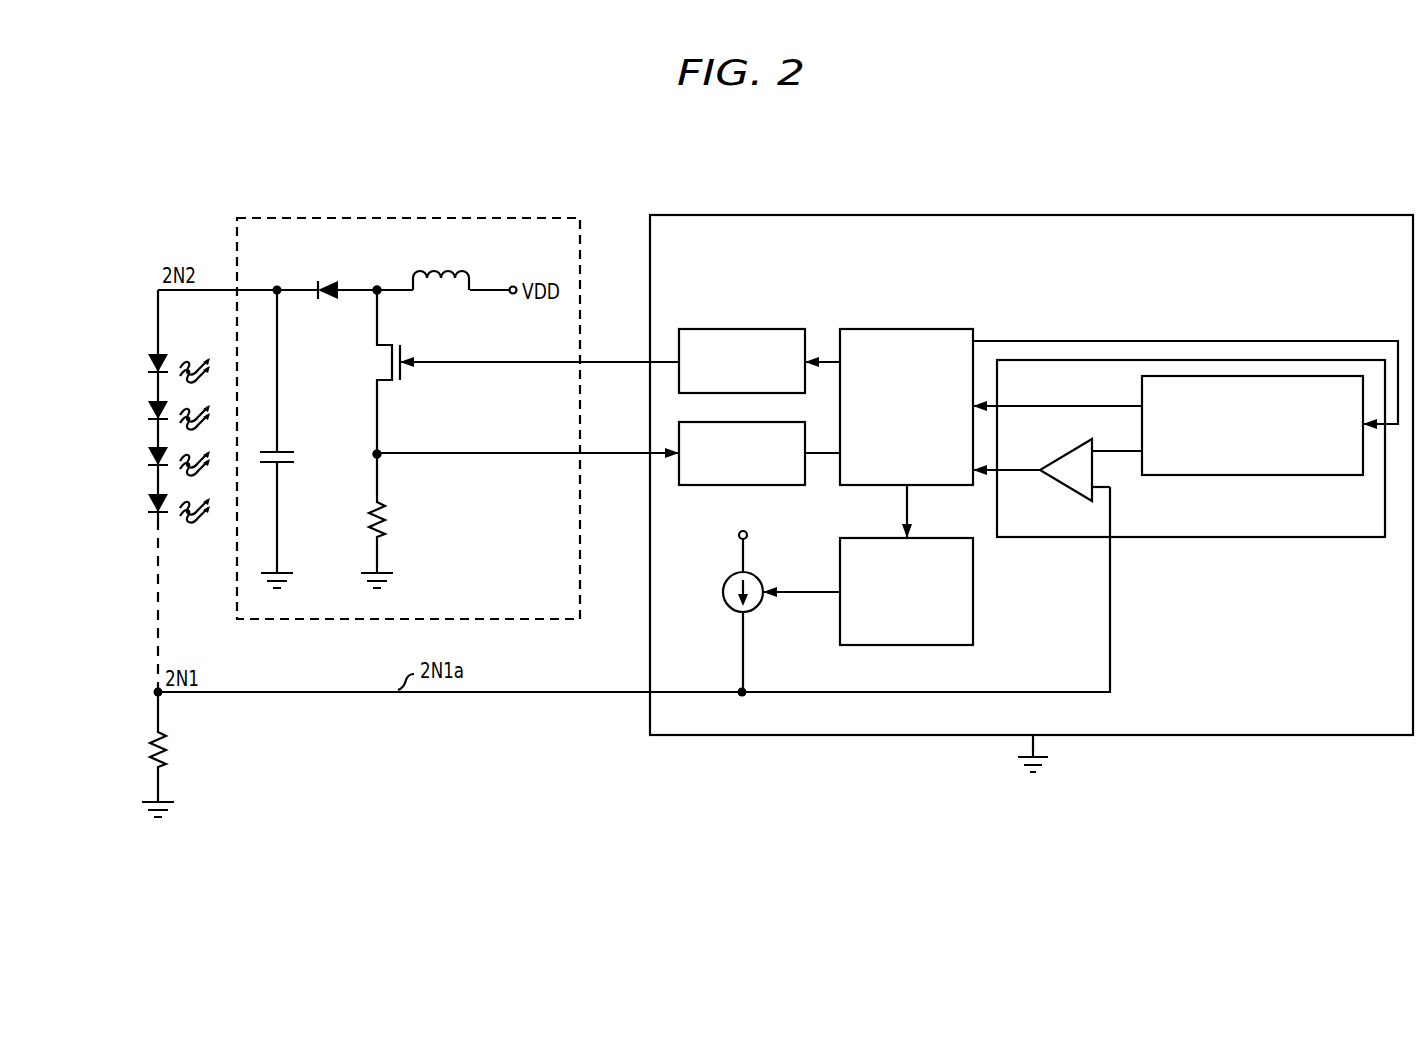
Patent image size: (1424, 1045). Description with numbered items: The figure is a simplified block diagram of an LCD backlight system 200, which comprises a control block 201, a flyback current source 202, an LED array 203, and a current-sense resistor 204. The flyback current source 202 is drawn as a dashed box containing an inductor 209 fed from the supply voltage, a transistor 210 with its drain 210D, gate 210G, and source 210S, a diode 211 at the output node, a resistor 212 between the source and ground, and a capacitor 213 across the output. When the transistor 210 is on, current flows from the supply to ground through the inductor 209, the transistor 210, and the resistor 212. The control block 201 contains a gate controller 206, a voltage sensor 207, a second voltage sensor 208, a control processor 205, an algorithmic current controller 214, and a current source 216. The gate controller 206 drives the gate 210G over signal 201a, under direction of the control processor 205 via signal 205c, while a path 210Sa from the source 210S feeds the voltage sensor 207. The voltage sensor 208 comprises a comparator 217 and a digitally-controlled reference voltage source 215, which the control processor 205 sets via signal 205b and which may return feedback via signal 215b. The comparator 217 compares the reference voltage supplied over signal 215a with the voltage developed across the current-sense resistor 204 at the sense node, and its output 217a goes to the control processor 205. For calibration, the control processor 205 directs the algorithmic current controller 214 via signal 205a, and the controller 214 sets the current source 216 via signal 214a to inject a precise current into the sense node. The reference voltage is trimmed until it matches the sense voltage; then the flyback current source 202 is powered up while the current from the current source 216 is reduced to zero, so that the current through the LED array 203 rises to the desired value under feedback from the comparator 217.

The LCD backlight system 200 is at (759, 132).
The control block 201 is at (1335, 213).
The signal 201a is at (620, 362).
The flyback current source 202 is at (498, 213).
The LED array 203 is at (140, 347).
The current-sense resistor 204 is at (148, 746).
The control processor 205 is at (895, 328).
The signal 205a is at (905, 506).
The signal 205b is at (1214, 340).
The signal 205c is at (828, 358).
The gate controller 206 is at (720, 328).
The voltage sensor 207 is at (738, 488).
The voltage sensor 208 is at (1288, 538).
The inductor 209 is at (472, 282).
The transistor 210 is at (376, 374).
The transistor drain 210D is at (377, 286).
The transistor gate 210G is at (539, 345).
The transistor source 210S is at (381, 458).
The source voltage sense line 210Sa is at (614, 458).
The diode 211 is at (314, 280).
The resistor 212 is at (372, 536).
The output capacitor 213 is at (292, 464).
The algorithmic current controller 214 is at (975, 594).
The signal 214a is at (798, 597).
The digitally-controlled reference voltage source 215 is at (1238, 477).
The signal 215a is at (1118, 452).
The signal 215b is at (1048, 406).
The current source 216 is at (730, 580).
The comparator 217 is at (1054, 464).
The signal 217a is at (1022, 478).